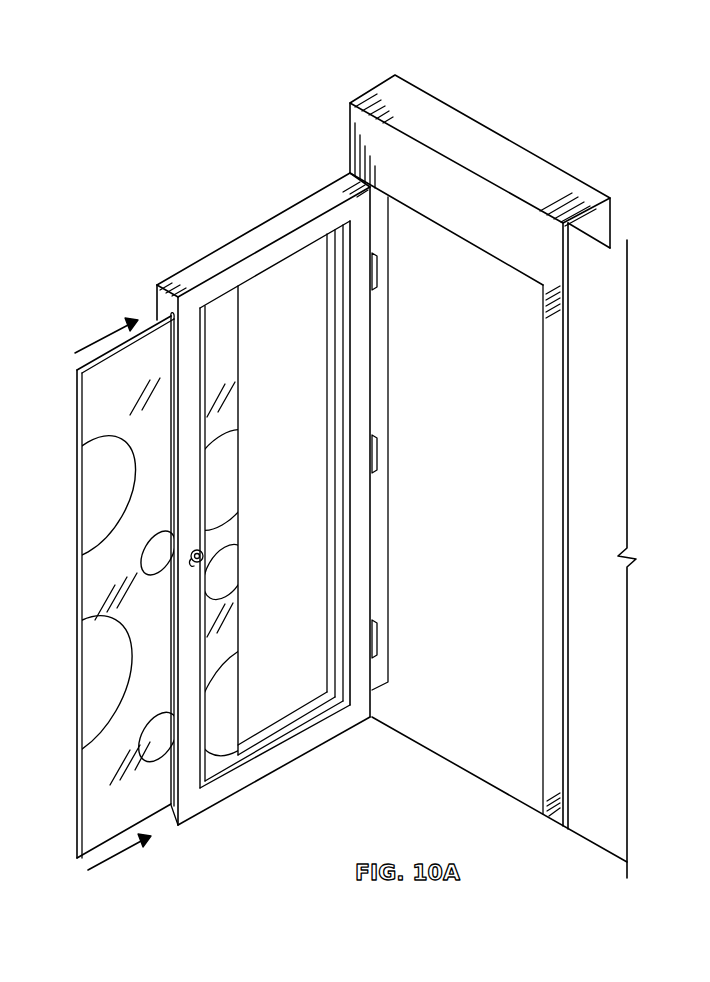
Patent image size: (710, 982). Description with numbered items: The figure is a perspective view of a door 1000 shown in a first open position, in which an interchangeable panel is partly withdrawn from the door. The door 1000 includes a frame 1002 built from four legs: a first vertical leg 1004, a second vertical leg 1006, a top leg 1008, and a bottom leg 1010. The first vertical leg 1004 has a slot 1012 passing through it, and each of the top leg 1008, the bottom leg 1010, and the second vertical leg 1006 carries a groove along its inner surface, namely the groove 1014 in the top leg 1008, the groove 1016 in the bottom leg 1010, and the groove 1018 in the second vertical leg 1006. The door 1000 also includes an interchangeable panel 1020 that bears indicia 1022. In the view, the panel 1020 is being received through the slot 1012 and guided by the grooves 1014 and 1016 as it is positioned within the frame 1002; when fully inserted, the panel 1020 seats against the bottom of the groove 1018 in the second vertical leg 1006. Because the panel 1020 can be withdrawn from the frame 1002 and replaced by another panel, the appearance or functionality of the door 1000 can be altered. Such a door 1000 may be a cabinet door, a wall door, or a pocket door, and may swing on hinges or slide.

The door 1000 is at (139, 124).
The frame 1002 is at (201, 241).
The first vertical leg 1004 is at (190, 375).
The second vertical leg 1006 is at (358, 553).
The top leg 1008 is at (295, 248).
The bottom leg 1010 is at (280, 758).
The slot 1012 is at (168, 812).
The groove 1014 is at (293, 250).
The groove 1016 is at (310, 713).
The groove 1018 is at (338, 447).
The interchangeable panel 1020 is at (90, 797).
The indicia 1022 is at (90, 490).